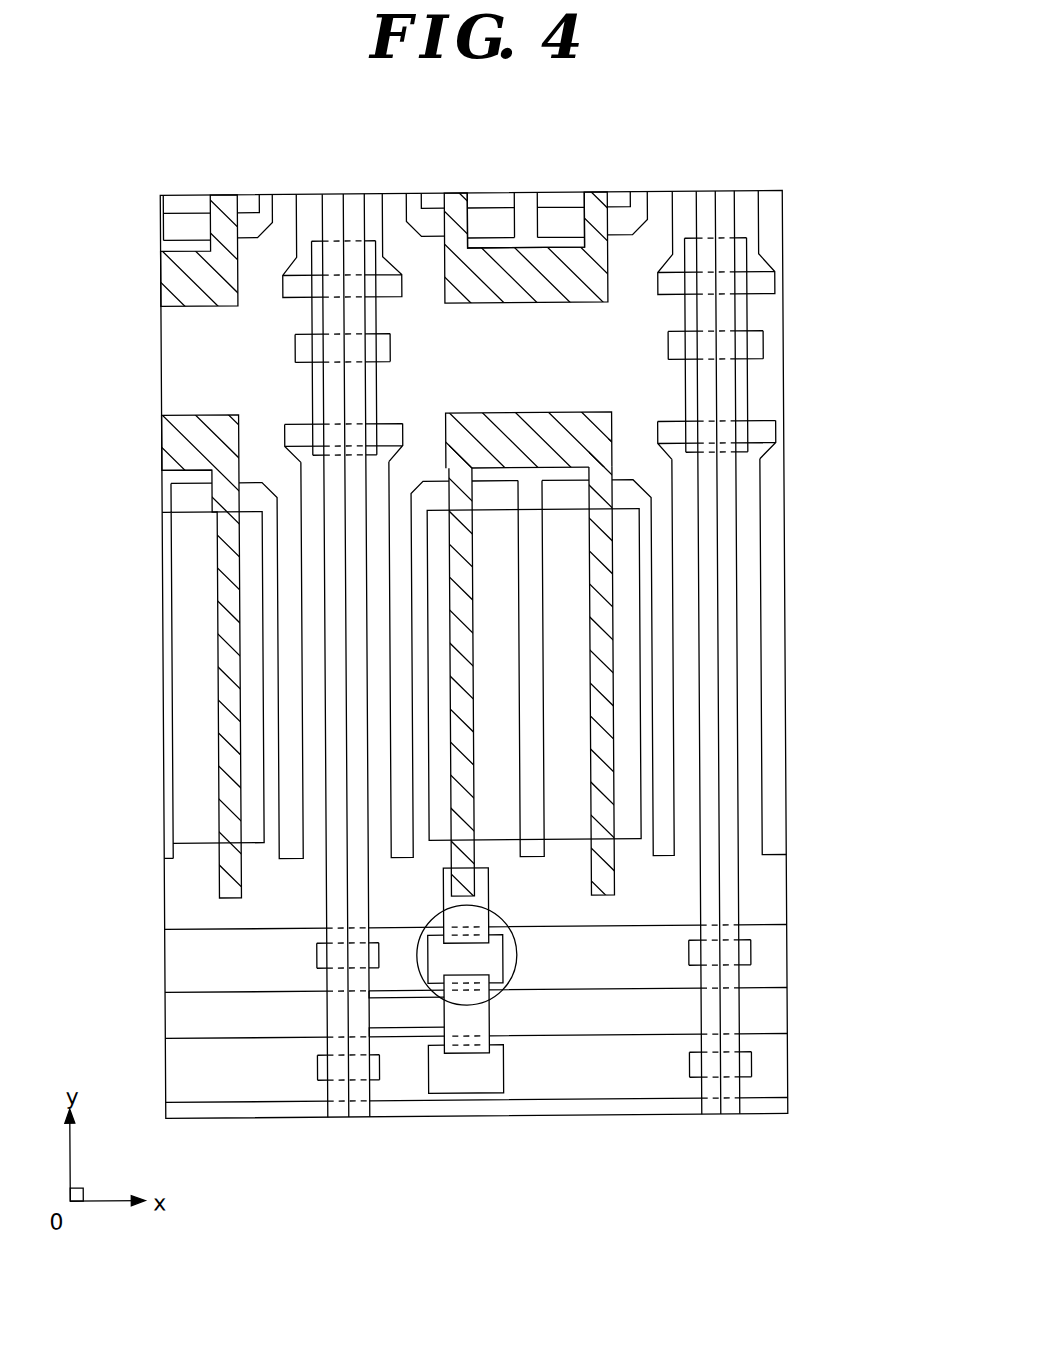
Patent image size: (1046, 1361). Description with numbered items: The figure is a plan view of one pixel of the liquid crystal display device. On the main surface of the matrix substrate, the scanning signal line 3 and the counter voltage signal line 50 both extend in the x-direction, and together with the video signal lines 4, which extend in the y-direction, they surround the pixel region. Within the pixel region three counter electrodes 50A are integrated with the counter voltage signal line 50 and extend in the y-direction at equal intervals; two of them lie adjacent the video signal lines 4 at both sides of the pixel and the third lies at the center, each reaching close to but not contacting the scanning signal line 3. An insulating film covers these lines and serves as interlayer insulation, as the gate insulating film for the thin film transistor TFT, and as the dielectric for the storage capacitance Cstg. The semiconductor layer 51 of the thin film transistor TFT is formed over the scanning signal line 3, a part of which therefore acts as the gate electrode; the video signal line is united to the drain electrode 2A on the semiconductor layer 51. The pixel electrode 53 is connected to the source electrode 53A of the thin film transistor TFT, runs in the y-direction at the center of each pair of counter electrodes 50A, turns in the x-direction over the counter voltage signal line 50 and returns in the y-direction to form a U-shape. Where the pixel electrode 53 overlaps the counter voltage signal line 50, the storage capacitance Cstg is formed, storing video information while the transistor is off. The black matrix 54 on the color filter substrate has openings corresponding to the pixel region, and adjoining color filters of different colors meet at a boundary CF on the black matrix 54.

The counter voltage signal line 50 is at (432, 360).
The counter electrode 50A is at (398, 597).
The storage capacitance Cstg is at (600, 436).
The pixel electrode 53 is at (603, 575).
The black matrix 54 is at (637, 762).
The source electrode 53A is at (488, 890).
The semiconductor layer 51 is at (503, 953).
The thin film transistor TFT is at (512, 977).
The scanning signal line 3 is at (200, 972).
The video signal line 4 is at (335, 755).
The drain electrode 2A is at (462, 1055).
The boundary of color filters CF is at (700, 1110).